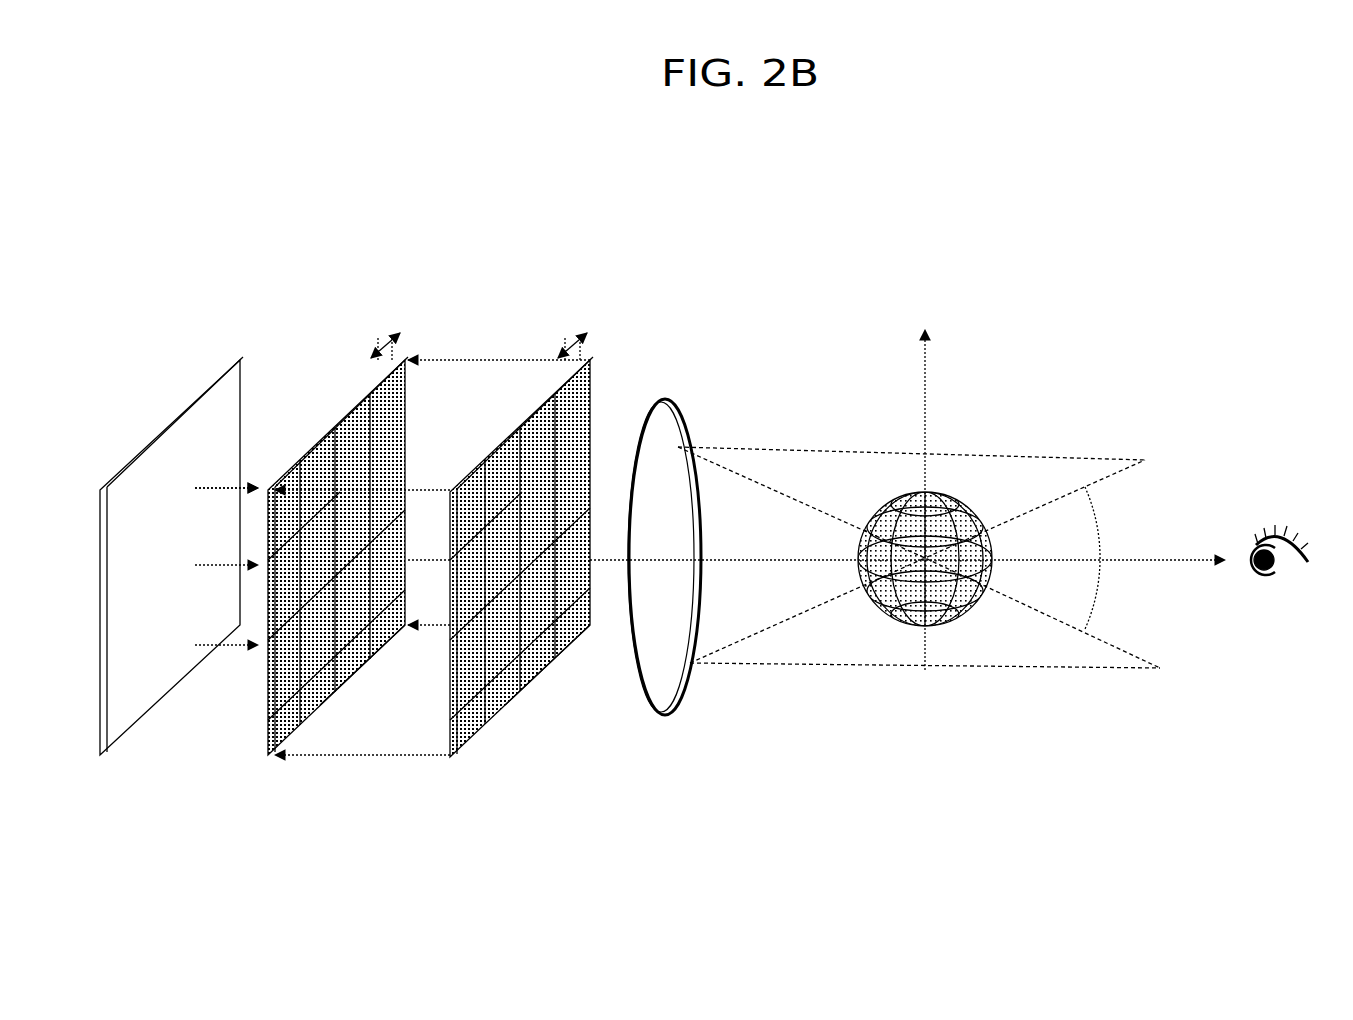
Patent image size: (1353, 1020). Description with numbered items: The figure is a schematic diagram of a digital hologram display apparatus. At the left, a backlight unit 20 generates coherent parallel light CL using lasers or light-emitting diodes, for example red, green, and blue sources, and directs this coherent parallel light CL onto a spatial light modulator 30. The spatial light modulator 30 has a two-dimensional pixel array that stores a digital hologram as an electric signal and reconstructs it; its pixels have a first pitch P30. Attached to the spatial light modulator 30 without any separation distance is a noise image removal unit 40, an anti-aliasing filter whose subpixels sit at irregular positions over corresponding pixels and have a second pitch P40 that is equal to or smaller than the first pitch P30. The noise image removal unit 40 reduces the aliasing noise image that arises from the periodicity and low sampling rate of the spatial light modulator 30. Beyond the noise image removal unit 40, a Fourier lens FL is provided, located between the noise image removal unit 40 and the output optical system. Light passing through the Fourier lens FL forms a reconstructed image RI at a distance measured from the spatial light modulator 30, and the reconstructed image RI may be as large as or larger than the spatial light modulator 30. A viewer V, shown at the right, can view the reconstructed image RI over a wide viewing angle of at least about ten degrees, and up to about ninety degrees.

The backlight unit 20 is at (103, 760).
The spatial light modulator 30 is at (271, 760).
The noise image removal unit 40 is at (452, 762).
The first pitch P30 is at (382, 345).
The second pitch P40 is at (567, 345).
The coherent parallel light CL is at (248, 485).
The Fourier lens FL is at (650, 712).
The reconstructed image RI is at (966, 490).
The viewer V is at (1283, 513).